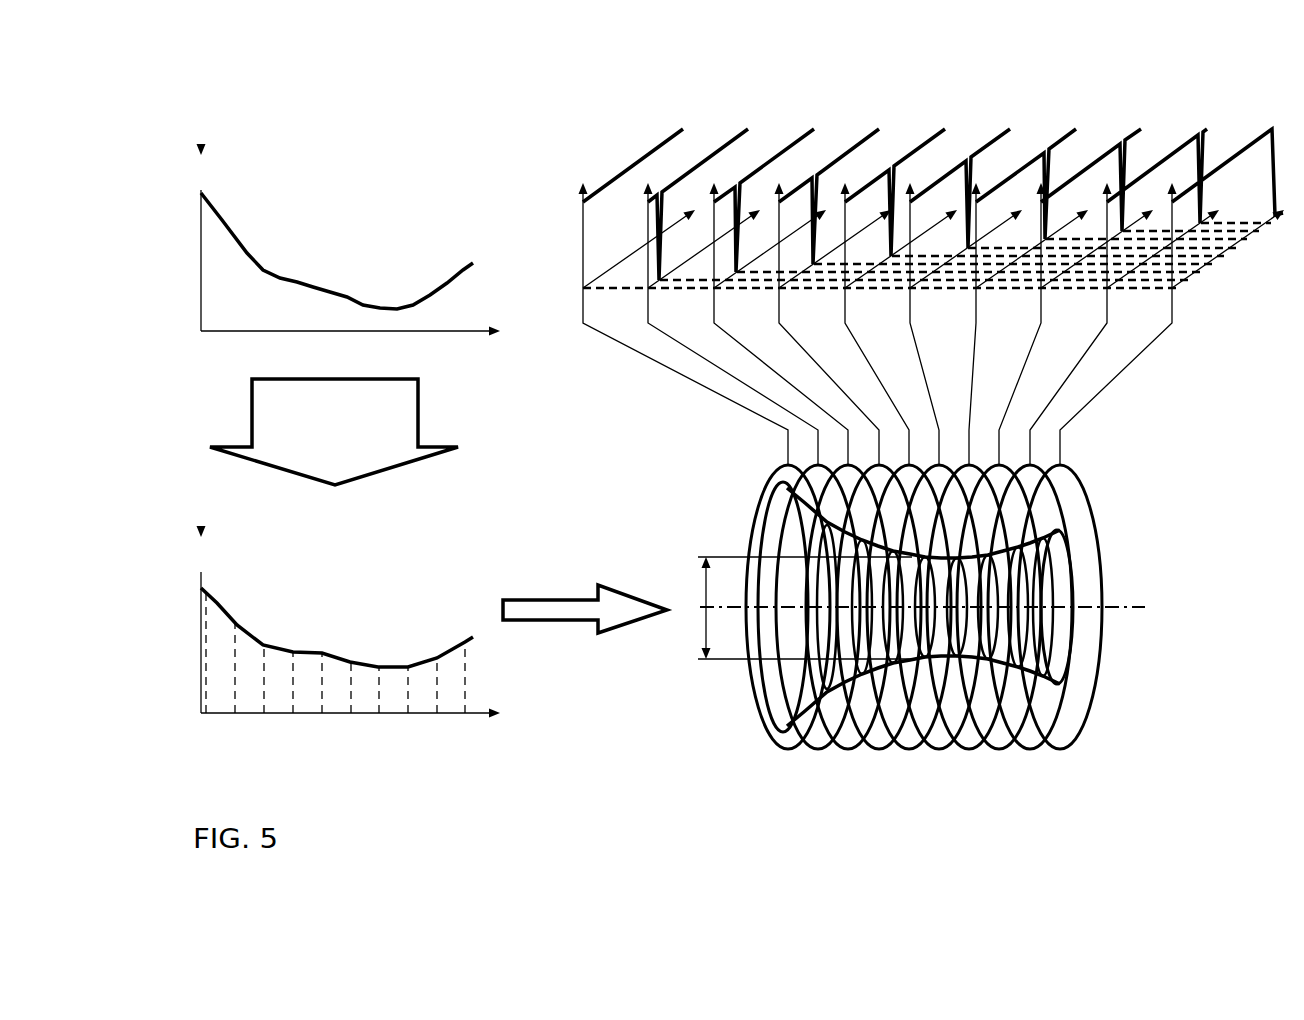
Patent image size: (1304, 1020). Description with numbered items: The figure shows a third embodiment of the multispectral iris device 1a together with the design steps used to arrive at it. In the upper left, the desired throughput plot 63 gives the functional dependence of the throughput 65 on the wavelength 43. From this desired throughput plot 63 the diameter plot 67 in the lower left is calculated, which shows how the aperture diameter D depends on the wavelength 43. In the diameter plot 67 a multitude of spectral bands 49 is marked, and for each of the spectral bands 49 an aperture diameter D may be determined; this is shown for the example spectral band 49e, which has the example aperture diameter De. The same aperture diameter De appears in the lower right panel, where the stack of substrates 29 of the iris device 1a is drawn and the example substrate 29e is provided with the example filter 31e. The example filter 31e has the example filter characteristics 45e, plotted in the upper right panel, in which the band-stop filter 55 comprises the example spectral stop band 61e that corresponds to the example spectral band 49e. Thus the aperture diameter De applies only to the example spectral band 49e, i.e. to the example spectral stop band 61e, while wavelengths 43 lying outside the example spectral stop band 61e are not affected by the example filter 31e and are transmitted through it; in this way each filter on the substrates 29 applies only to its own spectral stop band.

The desired throughput plot 63 is at (320, 443).
The throughput 65 is at (201, 262).
The wavelength 43 is at (443, 332).
The diameter plot 67 is at (592, 422).
The spectral bands 49 is at (621, 422).
The example spectral band 49e is at (673, 388).
The example spectral stop band 61e is at (362, 670).
The aperture diameter D is at (201, 641).
The example filter characteristics 45e is at (1003, 145).
The substrates 29 is at (924, 662).
The example substrate 29e is at (940, 737).
The example filter 31e is at (923, 662).
The band-stop filter 55 is at (928, 755).
The multispectral iris device 1a is at (927, 662).
The example aperture diameter De is at (782, 614).